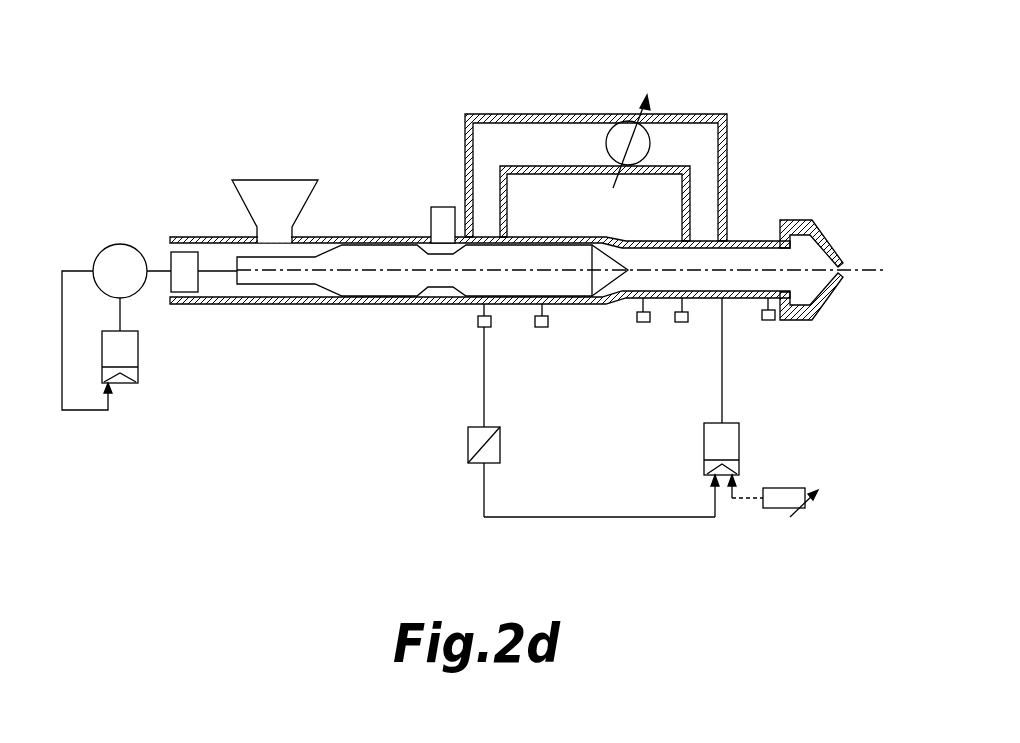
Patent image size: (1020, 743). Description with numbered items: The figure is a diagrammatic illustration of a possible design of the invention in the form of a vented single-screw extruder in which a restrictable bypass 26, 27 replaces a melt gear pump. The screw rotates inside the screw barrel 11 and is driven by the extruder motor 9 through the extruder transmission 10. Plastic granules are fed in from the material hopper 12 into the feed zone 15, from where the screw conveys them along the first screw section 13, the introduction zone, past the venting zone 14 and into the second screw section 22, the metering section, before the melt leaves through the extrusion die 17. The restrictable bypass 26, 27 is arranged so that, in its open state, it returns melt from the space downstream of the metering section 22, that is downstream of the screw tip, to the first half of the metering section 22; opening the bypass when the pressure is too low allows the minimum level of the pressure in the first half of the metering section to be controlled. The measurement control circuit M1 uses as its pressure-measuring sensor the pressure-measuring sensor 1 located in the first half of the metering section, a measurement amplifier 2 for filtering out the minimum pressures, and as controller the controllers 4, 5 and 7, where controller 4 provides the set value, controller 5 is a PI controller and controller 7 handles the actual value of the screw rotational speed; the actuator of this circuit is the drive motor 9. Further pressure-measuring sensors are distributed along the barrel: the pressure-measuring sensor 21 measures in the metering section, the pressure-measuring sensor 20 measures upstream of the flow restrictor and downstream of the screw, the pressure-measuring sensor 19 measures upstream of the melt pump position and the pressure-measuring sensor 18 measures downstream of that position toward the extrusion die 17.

The pressure-measuring sensor 1 is at (477, 323).
The measurement amplifier 2 is at (498, 447).
The controller 4 is at (785, 493).
The controller 5 is at (735, 437).
The controller 7 is at (134, 352).
The extruder motor 9 is at (108, 252).
The extruder transmission 10 is at (173, 257).
The screw barrel 11 is at (220, 236).
The material hopper 12 is at (278, 190).
The first screw section 13 is at (370, 255).
The venting zone 14 is at (442, 207).
The feed zone 15 is at (317, 292).
The extrusion die 17 is at (813, 220).
The pressure-measuring sensor 18 is at (768, 322).
The pressure-measuring sensor 19 is at (683, 324).
The pressure-measuring sensor 20 is at (643, 324).
The pressure-measuring sensor 21 is at (540, 328).
The second screw section 22 is at (525, 243).
The restrictable bypass 26 is at (497, 113).
The restrictable bypass 27 is at (620, 130).
The measurement control circuit M1 is at (601, 536).